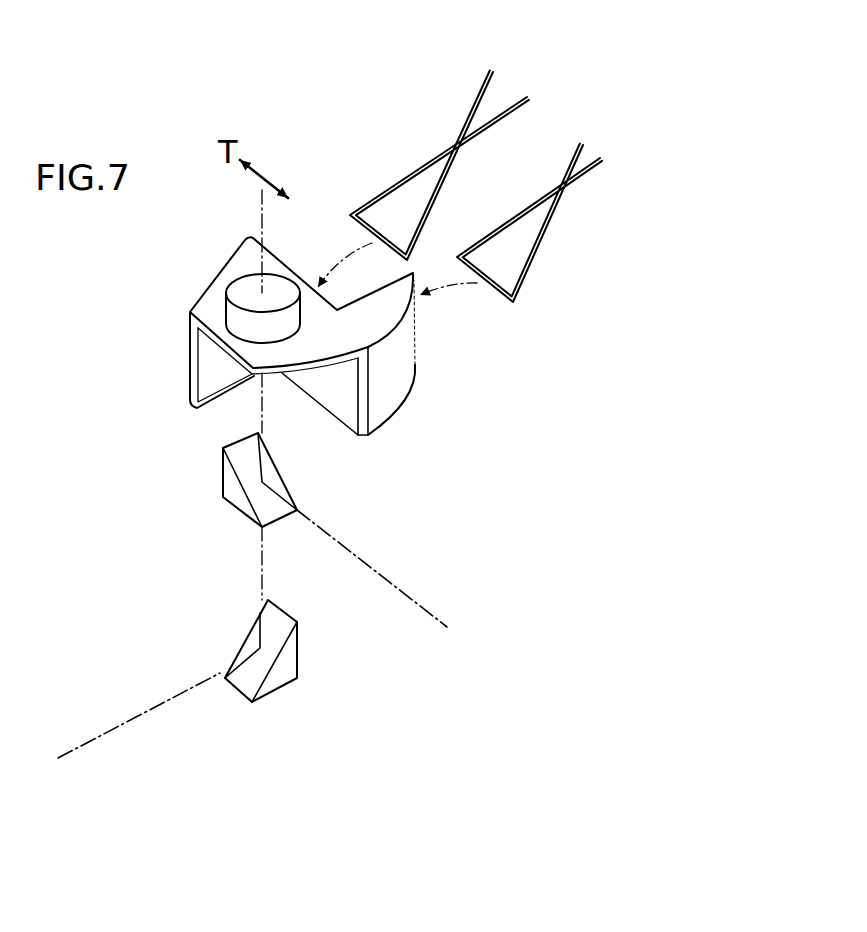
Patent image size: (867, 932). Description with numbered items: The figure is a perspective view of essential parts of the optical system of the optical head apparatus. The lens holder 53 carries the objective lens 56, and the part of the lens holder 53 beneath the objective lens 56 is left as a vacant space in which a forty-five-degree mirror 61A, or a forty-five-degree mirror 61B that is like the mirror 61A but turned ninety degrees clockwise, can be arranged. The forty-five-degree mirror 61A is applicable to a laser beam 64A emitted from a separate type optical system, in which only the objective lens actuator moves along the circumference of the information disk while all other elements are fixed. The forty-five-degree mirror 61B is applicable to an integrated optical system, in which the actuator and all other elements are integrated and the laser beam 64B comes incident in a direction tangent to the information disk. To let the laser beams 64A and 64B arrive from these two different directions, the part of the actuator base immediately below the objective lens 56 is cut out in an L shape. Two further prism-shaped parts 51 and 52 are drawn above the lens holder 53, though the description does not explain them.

The first prism (triangular prism) 51 is at (392, 185).
The second prism (triangular prism) 52 is at (537, 260).
The lens holder 53 is at (385, 400).
The objective lens 56 is at (243, 277).
The 45-degree mirror 61A is at (223, 478).
The 45-degree mirror 61B is at (292, 667).
The laser beam 64A is at (410, 593).
The laser beam 64B is at (140, 713).